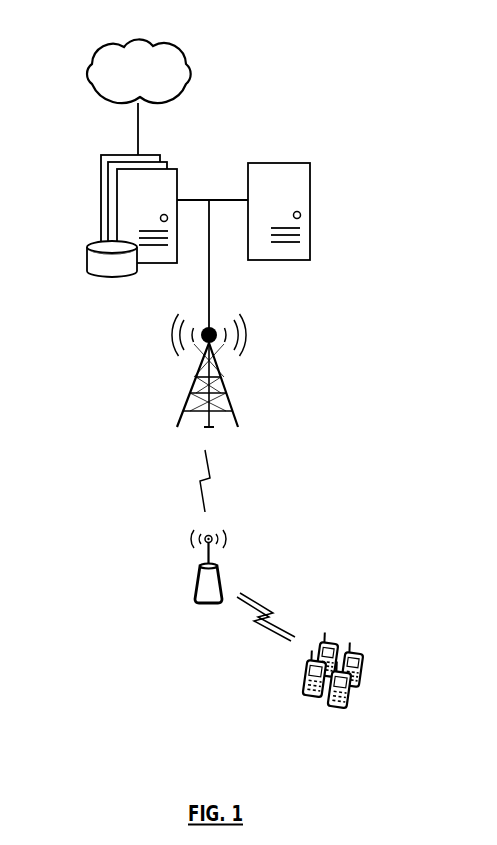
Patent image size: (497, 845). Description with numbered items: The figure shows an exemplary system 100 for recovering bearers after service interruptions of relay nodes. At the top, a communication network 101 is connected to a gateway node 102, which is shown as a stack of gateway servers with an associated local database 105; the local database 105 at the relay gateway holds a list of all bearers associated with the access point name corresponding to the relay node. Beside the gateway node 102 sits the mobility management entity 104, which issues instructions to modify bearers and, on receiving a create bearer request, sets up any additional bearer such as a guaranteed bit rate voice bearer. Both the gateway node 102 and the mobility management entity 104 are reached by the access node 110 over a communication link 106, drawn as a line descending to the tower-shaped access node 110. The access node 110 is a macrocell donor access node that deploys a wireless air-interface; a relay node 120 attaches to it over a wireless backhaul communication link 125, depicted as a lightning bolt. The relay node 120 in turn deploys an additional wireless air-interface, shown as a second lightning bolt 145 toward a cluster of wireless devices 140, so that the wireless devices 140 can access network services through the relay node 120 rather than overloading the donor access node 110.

The system 100 is at (323, 58).
The communication network 101 is at (153, 82).
The gateway node 102 is at (101, 155).
The mobility management entity 104 is at (309, 162).
The local database 105 is at (87, 258).
The communication link 106 is at (209, 282).
The access node 110 is at (197, 385).
The relay node 120 is at (217, 565).
The communication link 125 is at (212, 474).
The wireless devices 140 is at (371, 652).
The wireless link between access point and user equipment 145 is at (277, 610).